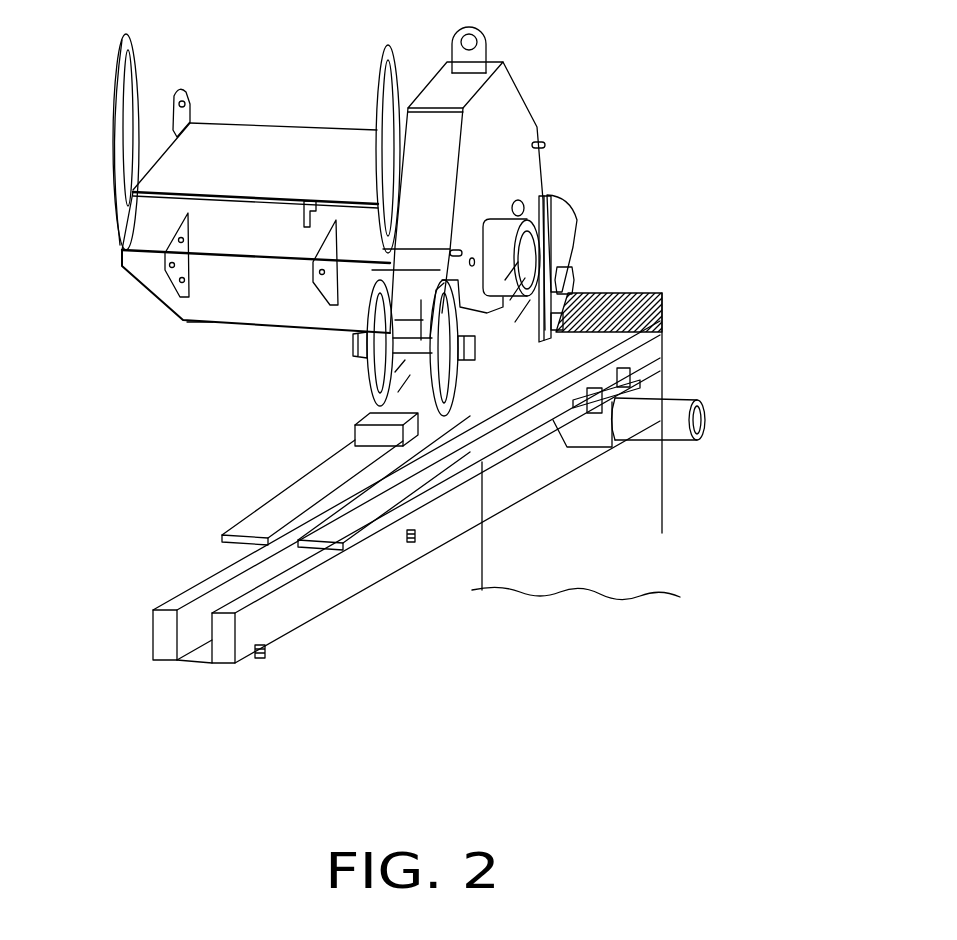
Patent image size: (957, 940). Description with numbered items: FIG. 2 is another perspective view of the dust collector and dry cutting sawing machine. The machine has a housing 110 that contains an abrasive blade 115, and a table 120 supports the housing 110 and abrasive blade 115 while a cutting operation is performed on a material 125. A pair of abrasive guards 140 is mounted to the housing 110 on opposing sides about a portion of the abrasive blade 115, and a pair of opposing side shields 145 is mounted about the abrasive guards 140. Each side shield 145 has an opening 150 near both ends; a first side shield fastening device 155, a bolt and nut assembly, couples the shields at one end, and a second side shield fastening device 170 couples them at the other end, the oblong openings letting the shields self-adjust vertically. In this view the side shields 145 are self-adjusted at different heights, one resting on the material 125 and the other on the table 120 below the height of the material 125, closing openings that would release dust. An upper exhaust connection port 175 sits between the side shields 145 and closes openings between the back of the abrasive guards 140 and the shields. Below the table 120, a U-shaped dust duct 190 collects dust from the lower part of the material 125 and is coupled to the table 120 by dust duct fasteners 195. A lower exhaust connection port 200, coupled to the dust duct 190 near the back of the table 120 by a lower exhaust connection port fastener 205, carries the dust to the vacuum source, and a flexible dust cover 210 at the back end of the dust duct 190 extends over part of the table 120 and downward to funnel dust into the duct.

The housing 110 is at (270, 140).
The abrasive blade 115 is at (392, 308).
The table 120 is at (160, 634).
The material 125 is at (355, 437).
The abrasive guards 140 is at (395, 378).
The side shields 145 is at (385, 395).
The opening 150 is at (363, 367).
The first side shield fastening device 155 is at (441, 400).
The second side shield fastening device 170 is at (572, 272).
The upper exhaust connection port 175 is at (560, 213).
The dust duct 190 is at (202, 655).
The dust duct fasteners 195 is at (410, 537).
The lower exhaust connection port 200 is at (678, 433).
The lower exhaust connection port fastener 205 is at (632, 385).
The dust cover 210 is at (622, 298).